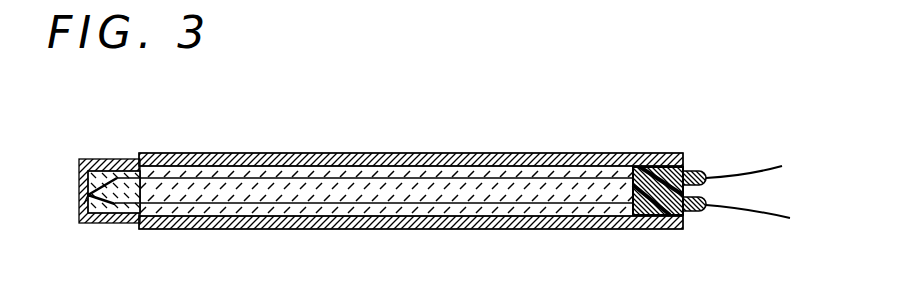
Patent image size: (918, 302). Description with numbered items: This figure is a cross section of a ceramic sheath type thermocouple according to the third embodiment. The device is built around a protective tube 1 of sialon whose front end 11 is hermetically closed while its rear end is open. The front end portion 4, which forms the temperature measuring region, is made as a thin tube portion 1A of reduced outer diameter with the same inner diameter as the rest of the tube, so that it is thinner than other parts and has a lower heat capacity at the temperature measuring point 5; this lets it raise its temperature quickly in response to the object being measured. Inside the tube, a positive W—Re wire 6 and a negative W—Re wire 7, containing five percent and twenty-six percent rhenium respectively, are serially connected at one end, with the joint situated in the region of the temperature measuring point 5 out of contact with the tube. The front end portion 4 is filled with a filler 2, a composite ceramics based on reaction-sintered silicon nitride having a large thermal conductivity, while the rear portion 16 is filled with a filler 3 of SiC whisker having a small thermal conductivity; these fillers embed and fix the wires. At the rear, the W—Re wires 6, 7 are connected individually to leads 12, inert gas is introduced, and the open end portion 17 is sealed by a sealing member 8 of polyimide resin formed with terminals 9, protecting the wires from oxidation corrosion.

The protective tube 1 is at (281, 166).
The thin tube portion 1A is at (113, 166).
The filler 2 is at (109, 212).
The filler 3 is at (284, 190).
The front end portion 4 is at (98, 160).
The temperature measuring point 5 is at (86, 196).
The W—Re wire 6 is at (421, 179).
The W—Re wire 7 is at (408, 204).
The sealing member 8 is at (655, 167).
The terminals 9 is at (698, 174).
The front end 11 is at (84, 204).
The leads 12 is at (782, 166).
The rear portion 16 is at (449, 168).
The open end portion 17 is at (669, 167).